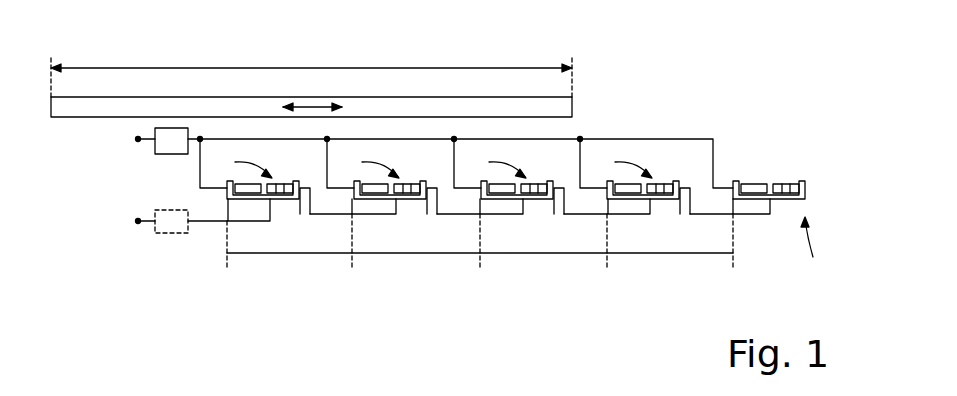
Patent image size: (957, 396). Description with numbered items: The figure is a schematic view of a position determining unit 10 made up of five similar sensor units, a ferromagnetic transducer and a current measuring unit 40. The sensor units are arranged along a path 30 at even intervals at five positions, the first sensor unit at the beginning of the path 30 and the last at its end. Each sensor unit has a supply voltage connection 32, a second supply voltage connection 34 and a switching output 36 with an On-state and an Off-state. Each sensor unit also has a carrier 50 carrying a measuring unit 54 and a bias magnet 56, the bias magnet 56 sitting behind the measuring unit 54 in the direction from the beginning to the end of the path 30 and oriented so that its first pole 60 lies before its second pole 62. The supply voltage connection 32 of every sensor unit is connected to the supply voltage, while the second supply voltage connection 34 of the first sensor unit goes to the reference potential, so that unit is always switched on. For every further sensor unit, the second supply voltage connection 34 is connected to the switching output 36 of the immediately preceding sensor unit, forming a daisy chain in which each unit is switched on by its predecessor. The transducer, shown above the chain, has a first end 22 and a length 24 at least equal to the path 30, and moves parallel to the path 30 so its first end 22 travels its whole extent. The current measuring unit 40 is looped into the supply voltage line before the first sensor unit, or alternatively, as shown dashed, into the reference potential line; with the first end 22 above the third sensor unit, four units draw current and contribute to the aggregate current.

The position determining unit 10 is at (665, 103).
The first end 22 is at (578, 106).
The length 24 is at (345, 67).
The path 30 is at (698, 255).
The supply voltage connection 32 is at (530, 190).
The second supply voltage connection 34 is at (265, 203).
The switching output 36 is at (305, 205).
The current measuring unit 40 is at (170, 150).
The carrier 50 is at (807, 192).
The measuring unit 54 is at (753, 183).
The bias magnet 56 is at (811, 154).
The first pole 60 is at (777, 182).
The second pole 62 is at (793, 182).